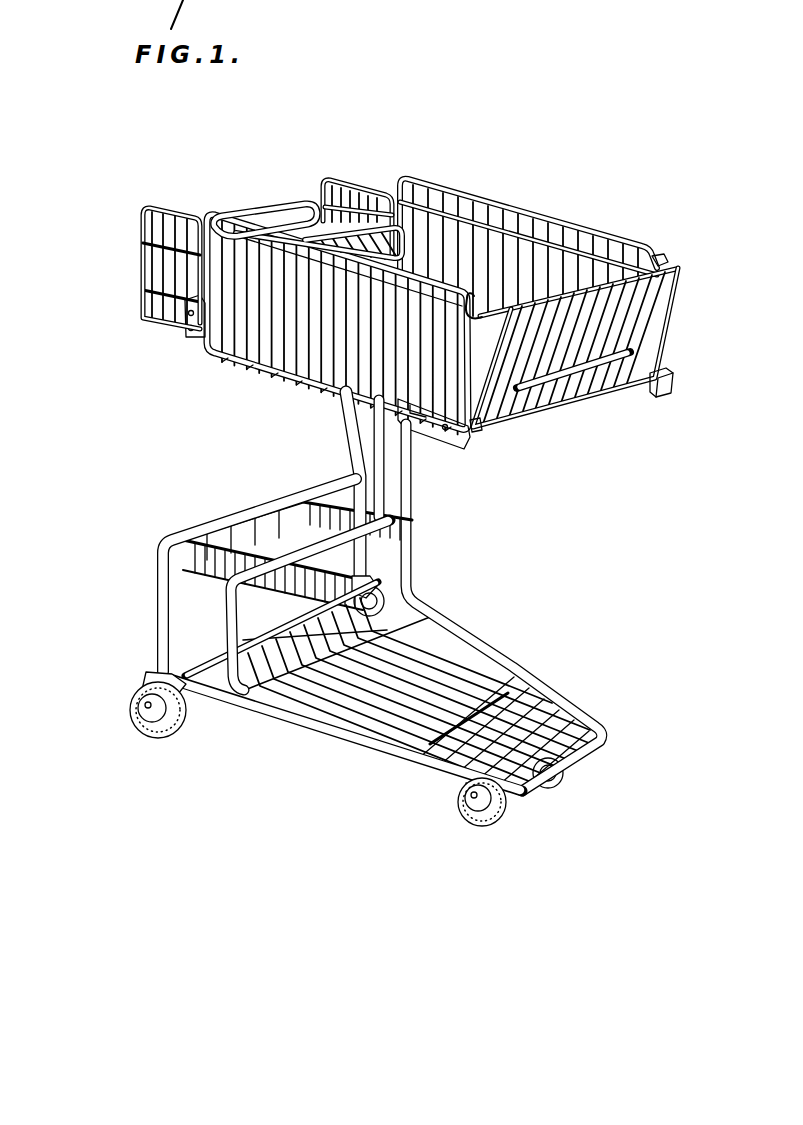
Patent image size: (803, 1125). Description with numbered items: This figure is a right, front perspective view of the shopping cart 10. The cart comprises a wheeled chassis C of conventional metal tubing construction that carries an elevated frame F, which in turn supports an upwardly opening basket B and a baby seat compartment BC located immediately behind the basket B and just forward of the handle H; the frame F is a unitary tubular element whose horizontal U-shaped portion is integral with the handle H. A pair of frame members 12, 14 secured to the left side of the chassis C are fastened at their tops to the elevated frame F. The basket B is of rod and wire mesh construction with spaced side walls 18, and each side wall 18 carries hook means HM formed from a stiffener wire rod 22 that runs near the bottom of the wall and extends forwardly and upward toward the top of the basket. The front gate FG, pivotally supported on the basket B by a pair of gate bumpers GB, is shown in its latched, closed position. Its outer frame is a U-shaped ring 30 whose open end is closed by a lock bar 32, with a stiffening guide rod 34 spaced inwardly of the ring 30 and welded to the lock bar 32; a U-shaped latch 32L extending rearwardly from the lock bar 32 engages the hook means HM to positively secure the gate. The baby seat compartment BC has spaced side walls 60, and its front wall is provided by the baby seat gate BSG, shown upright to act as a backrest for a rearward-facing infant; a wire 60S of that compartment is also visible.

The shopping cart 10 is at (398, 467).
The frame member 12 is at (353, 458).
The frame member 14 is at (410, 507).
The side wall 18 is at (505, 200).
The stiffener wire rod 22 is at (325, 362).
The U-shaped ring 30 is at (613, 331).
The lock bar 32 is at (678, 278).
The U-shaped latch 32L is at (666, 258).
The stiffening guide rod 34 is at (552, 383).
The side wall 60 is at (119, 263).
The panel top strand 60S is at (158, 238).
The basket B is at (398, 309).
The baby seat compartment BC is at (138, 332).
The baby seat gate BSG is at (373, 216).
The wheeled chassis C is at (366, 609).
The elevated frame F is at (261, 532).
The front gate FG is at (672, 323).
The gate bumper GB is at (668, 373).
The handle H is at (283, 196).
The hook means HM is at (490, 413).